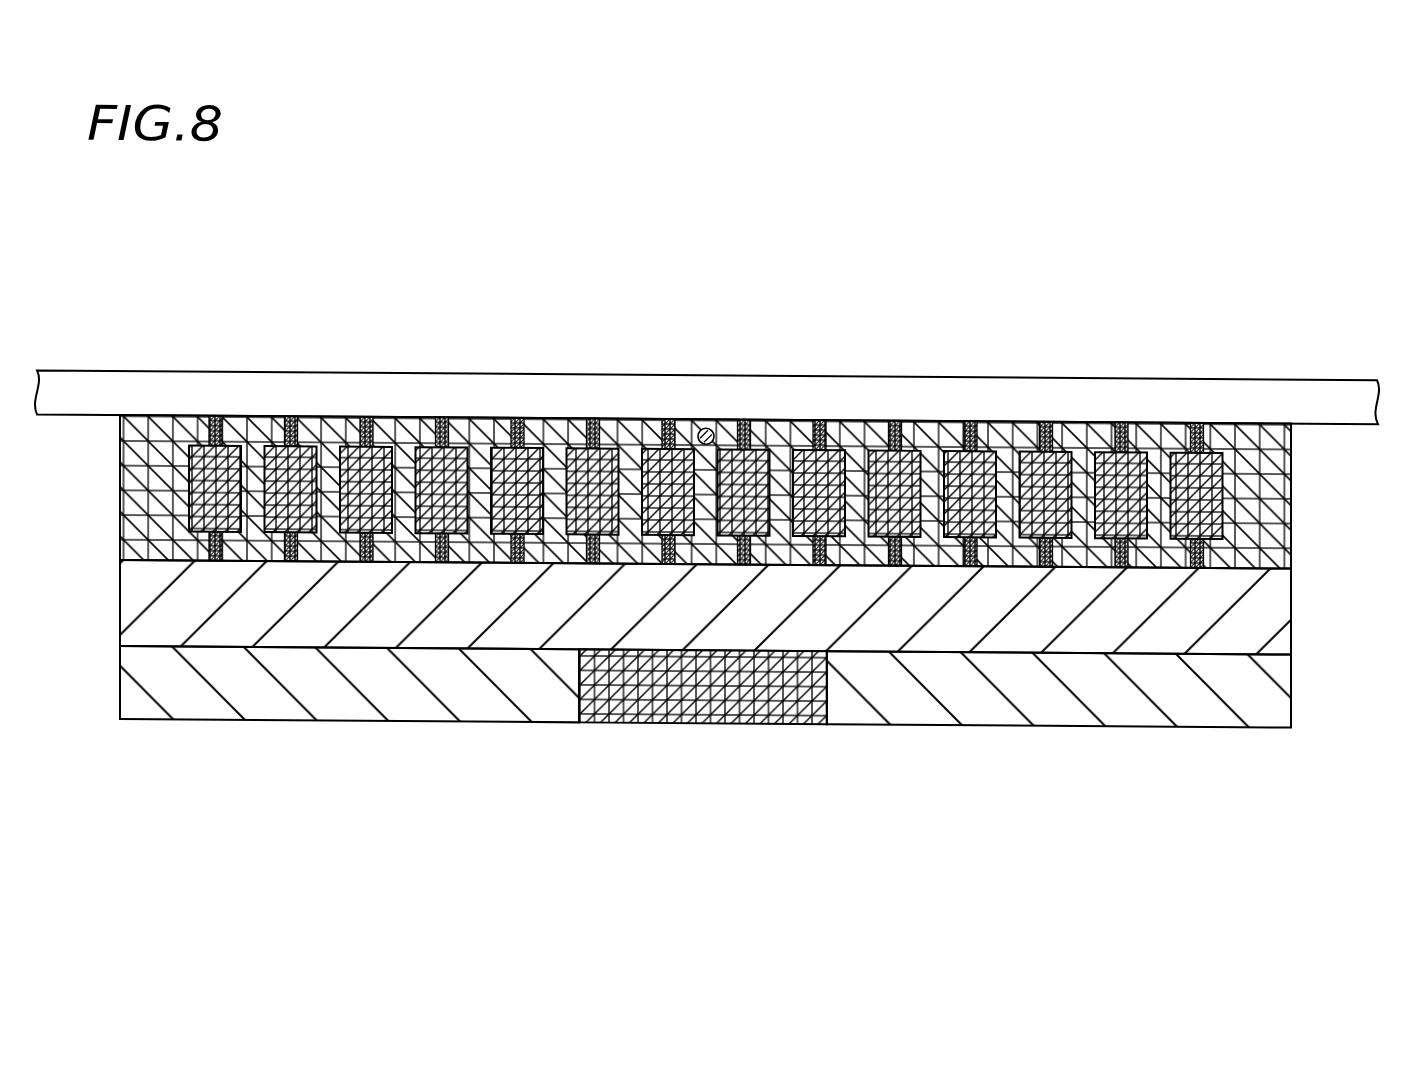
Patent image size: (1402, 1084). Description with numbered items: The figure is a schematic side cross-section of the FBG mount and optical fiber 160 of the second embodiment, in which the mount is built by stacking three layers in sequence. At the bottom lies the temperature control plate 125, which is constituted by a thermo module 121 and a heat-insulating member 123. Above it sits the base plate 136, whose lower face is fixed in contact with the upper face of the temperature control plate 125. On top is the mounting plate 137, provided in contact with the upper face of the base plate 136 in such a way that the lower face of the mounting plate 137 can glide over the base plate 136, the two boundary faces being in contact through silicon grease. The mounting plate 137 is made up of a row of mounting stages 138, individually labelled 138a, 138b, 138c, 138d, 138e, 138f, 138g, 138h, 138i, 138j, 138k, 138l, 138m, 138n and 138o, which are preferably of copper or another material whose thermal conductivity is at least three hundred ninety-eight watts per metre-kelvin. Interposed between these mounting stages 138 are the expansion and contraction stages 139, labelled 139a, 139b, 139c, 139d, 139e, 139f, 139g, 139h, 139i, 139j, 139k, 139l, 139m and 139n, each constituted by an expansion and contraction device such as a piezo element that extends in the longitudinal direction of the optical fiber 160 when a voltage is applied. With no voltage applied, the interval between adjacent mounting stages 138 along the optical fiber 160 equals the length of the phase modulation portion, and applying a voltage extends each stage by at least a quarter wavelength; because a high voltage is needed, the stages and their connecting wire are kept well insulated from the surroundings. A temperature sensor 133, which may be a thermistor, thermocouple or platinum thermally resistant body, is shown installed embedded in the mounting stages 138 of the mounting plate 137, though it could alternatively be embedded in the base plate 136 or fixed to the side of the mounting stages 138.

The thermo module 121 is at (703, 716).
The heat-insulating member 123 is at (517, 677).
The temperature control plate 125 is at (705, 739).
The temperature sensor 133 is at (708, 440).
The base plate 136 is at (1243, 609).
The mounting plate 137 is at (715, 376).
The mounting stages 138 is at (715, 426).
The mounting stage 138a is at (165, 435).
The mounting stage 138b is at (252, 435).
The mounting stage 138c is at (328, 435).
The mounting stage 138d is at (403, 435).
The mounting stage 138e is at (479, 435).
The mounting stage 138f is at (554, 435).
The mounting stage 138g is at (630, 435).
The mounting stage 138h is at (704, 435).
The mounting stage 138i is at (781, 435).
The mounting stage 138j is at (857, 435).
The mounting stage 138k is at (932, 435).
The mounting stage 138l is at (1008, 435).
The mounting stage 138m is at (1083, 435).
The mounting stage 138n is at (1159, 435).
The mounting stage 138o is at (1260, 453).
The expansion and contraction stages 139 is at (709, 397).
The expansion and contraction stage 139a is at (204, 462).
The expansion and contraction stage 139b is at (280, 462).
The expansion and contraction stage 139c is at (355, 462).
The expansion and contraction stage 139d is at (430, 462).
The expansion and contraction stage 139e is at (506, 462).
The expansion and contraction stage 139f is at (582, 462).
The expansion and contraction stage 139g is at (657, 462).
The expansion and contraction stage 139h is at (733, 462).
The expansion and contraction stage 139i is at (808, 462).
The expansion and contraction stage 139j is at (884, 462).
The expansion and contraction stage 139k is at (959, 462).
The expansion and contraction stage 139l is at (1035, 462).
The expansion and contraction stage 139m is at (1110, 462).
The expansion and contraction stage 139n is at (1206, 422).
The optical fiber 160 is at (1332, 396).